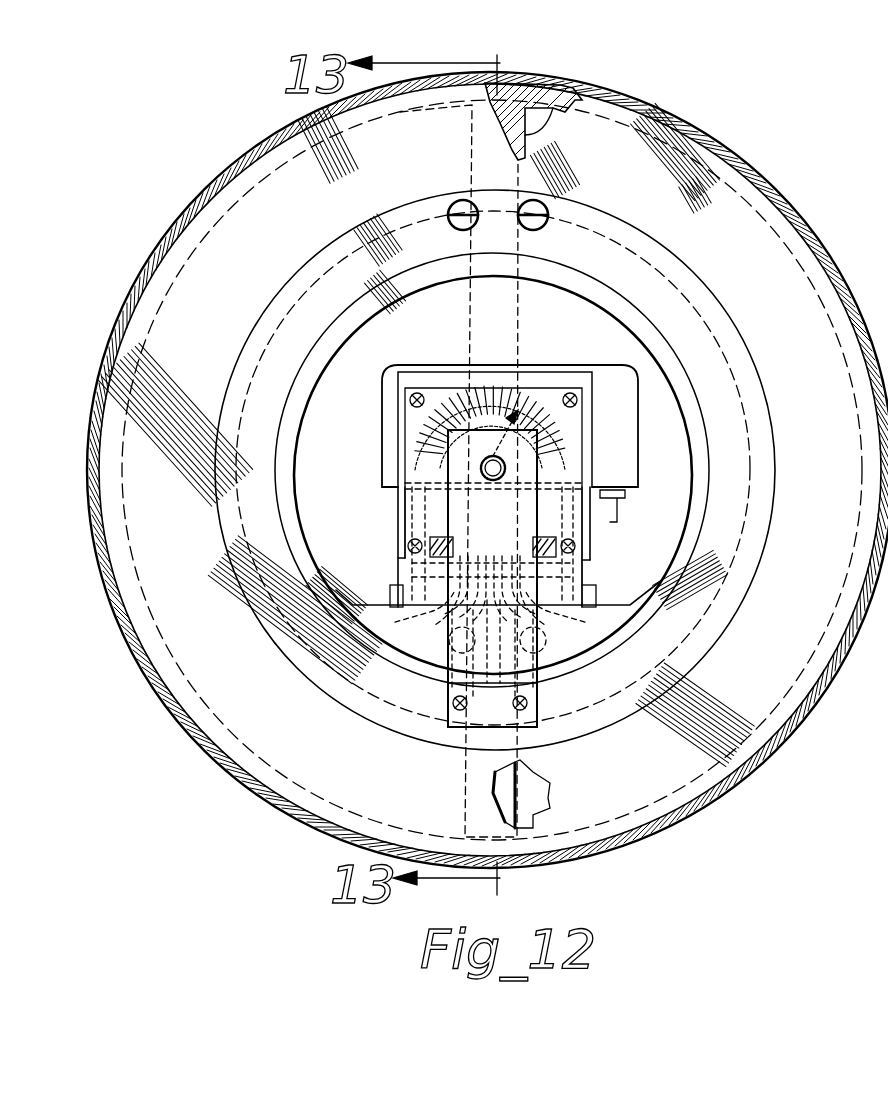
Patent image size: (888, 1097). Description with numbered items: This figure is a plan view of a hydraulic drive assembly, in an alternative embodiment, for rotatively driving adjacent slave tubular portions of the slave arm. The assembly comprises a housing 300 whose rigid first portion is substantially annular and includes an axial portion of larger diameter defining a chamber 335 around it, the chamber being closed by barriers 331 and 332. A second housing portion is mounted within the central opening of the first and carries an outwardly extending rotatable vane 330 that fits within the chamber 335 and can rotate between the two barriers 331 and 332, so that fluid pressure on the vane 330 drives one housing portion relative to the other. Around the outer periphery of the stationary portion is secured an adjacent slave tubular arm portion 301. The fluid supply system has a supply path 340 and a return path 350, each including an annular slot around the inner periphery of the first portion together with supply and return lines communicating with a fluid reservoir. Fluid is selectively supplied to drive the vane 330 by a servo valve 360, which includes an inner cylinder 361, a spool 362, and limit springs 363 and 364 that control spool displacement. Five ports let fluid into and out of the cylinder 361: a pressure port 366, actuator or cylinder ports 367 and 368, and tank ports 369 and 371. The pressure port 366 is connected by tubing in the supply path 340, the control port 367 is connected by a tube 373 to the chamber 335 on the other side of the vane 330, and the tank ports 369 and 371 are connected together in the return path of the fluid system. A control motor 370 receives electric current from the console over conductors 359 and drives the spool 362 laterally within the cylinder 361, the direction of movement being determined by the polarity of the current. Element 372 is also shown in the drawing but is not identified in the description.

The housing 300 is at (706, 118).
The slave tubular arm portion 301 is at (738, 790).
The rotatable vane 330 is at (520, 808).
The barrier 331 is at (553, 88).
The barrier 332 is at (470, 158).
The chamber 335 is at (745, 212).
The supply path 340 is at (467, 231).
The return path 350 is at (534, 231).
The conductors 359 is at (617, 510).
The servo valve 360 is at (368, 489).
The inner cylinder 361 is at (398, 517).
The spool 362 is at (491, 481).
The limit spring 363 is at (406, 551).
The limit spring 364 is at (585, 535).
The pressure port 366 is at (541, 628).
The control port 367 is at (449, 628).
The cylinder port 368 is at (543, 607).
The tank port 369 is at (410, 580).
The control motor 370 is at (612, 366).
The tank port 371 is at (583, 580).
The finger 372 is at (447, 610).
The tube 373 is at (596, 593).